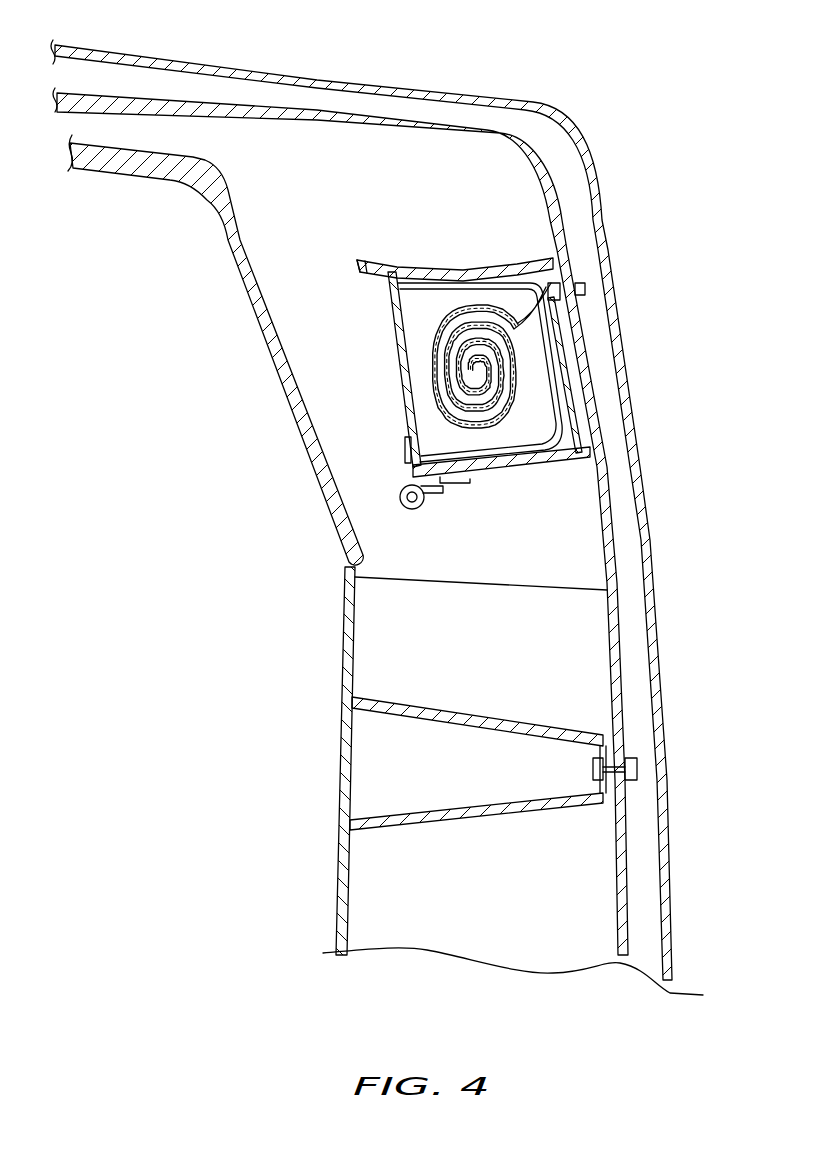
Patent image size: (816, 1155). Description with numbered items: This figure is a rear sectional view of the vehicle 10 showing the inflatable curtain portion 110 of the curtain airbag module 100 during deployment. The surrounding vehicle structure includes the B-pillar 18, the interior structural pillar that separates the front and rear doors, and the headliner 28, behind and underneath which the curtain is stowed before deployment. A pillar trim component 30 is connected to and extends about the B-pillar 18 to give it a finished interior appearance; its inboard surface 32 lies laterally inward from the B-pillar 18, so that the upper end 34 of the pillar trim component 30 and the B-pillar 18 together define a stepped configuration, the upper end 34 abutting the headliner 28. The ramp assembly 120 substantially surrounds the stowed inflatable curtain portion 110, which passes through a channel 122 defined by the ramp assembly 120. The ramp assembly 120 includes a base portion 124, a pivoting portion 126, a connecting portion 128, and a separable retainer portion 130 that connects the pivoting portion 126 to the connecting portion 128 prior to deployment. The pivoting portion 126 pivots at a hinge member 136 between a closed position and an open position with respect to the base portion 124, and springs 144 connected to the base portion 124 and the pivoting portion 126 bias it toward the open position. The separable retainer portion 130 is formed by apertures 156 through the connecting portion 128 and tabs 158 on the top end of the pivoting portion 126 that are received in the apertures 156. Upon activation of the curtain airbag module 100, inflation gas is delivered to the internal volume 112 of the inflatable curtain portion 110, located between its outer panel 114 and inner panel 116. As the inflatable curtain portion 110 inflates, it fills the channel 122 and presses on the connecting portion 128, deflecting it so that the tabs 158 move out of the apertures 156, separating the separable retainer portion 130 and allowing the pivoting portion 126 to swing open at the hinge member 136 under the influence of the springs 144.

The vehicle 10 is at (600, 45).
The B-pillar 18 is at (658, 632).
The headliner 28 is at (242, 285).
The pillar trim component 30 is at (325, 695).
The inboard surface 32 is at (340, 765).
The upper end 34 is at (548, 583).
The curtain airbag module 100 is at (325, 172).
The inflatable curtain portion 110 is at (483, 272).
The internal volume 112 is at (412, 304).
The outer panel 114 is at (540, 367).
The inner panel 116 is at (563, 402).
The ramp assembly 120 is at (345, 248).
The channel 122 is at (527, 272).
The base portion 124 is at (492, 477).
The pivoting portion 126 is at (402, 358).
The connecting portion 128 is at (453, 267).
The separable retainer portion 130 is at (389, 195).
The hinge member 136 is at (440, 510).
The springs 144 is at (408, 448).
The apertures 156 is at (408, 265).
The tabs 158 is at (390, 266).